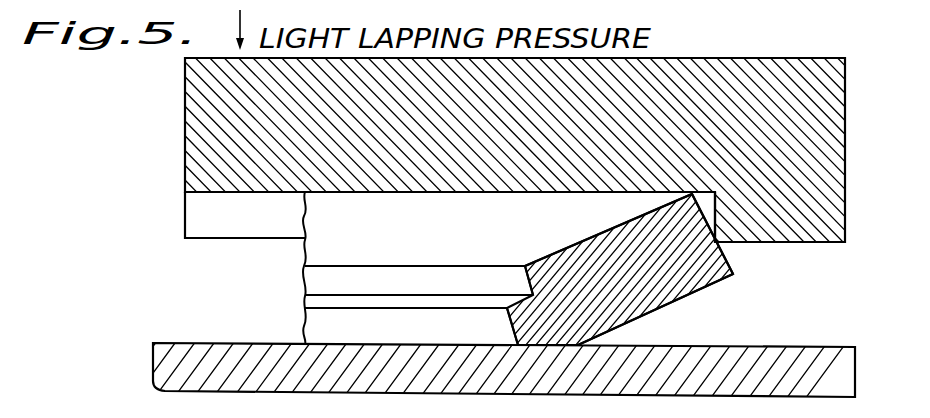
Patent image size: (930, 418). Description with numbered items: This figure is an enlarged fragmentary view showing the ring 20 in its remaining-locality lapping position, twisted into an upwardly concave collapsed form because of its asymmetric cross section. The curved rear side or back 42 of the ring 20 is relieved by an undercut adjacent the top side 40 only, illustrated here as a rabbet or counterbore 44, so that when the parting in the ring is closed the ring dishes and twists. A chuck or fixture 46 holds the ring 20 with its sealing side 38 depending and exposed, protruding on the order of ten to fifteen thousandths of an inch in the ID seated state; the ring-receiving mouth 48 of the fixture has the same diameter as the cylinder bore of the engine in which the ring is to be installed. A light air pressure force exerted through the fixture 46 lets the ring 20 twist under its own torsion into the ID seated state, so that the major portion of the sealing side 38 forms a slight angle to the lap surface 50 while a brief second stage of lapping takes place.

The ring 20 is at (545, 262).
The sealing side 38 is at (660, 308).
The top side 40 is at (625, 222).
The curved rear side or back 42 is at (510, 333).
The rabbet or counterbore 44 is at (527, 280).
The chuck or fixture 46 is at (713, 61).
The ring-receiving mouth 48 is at (712, 200).
The lap surface 50 is at (845, 310).